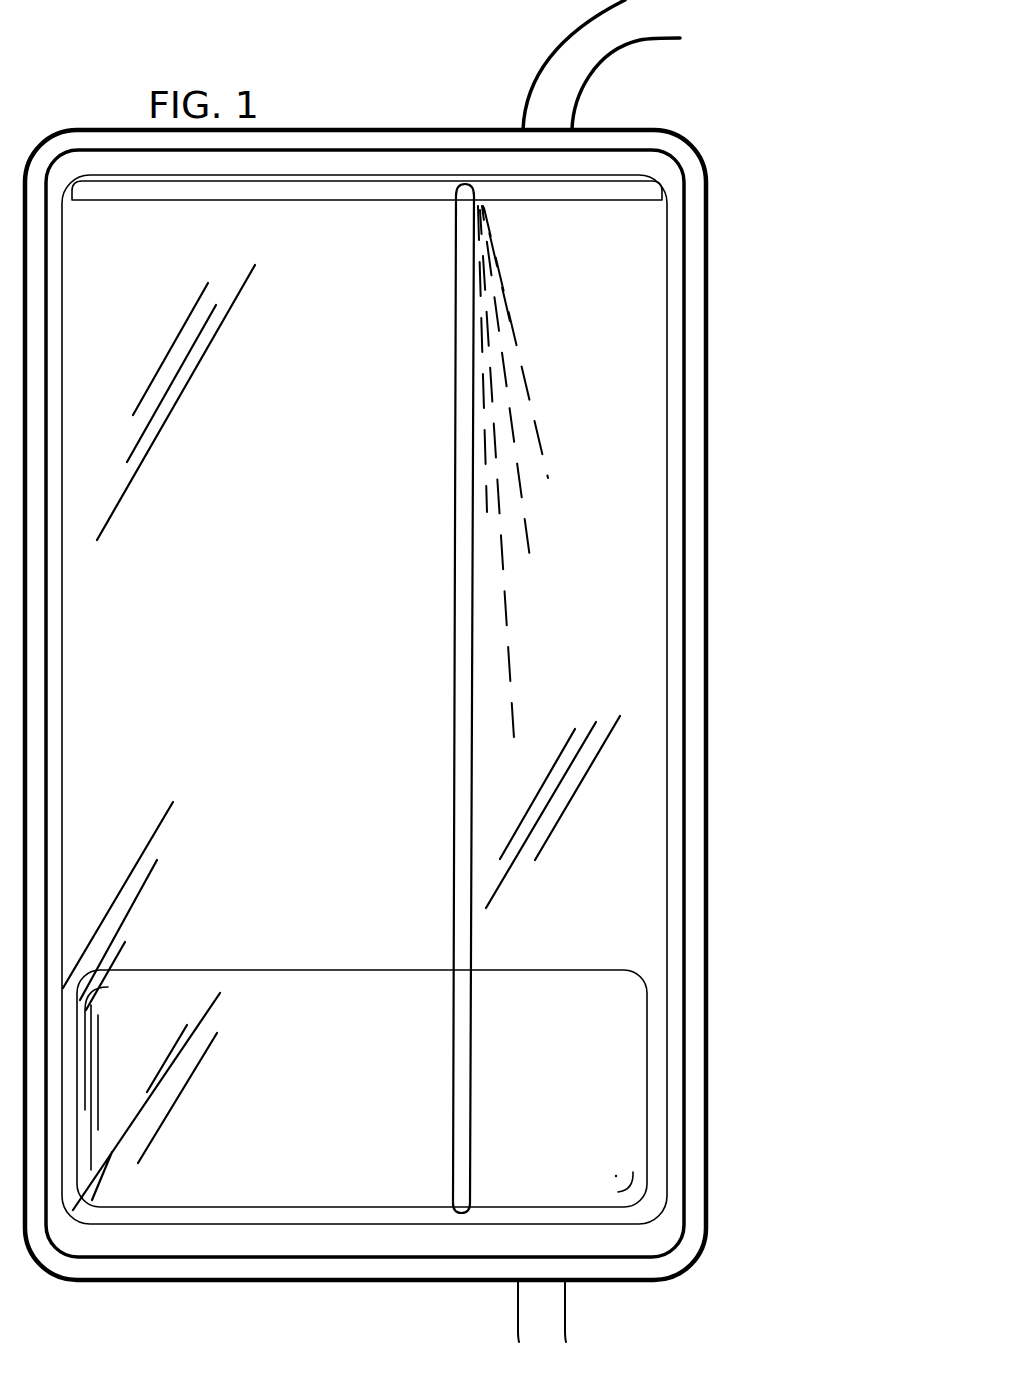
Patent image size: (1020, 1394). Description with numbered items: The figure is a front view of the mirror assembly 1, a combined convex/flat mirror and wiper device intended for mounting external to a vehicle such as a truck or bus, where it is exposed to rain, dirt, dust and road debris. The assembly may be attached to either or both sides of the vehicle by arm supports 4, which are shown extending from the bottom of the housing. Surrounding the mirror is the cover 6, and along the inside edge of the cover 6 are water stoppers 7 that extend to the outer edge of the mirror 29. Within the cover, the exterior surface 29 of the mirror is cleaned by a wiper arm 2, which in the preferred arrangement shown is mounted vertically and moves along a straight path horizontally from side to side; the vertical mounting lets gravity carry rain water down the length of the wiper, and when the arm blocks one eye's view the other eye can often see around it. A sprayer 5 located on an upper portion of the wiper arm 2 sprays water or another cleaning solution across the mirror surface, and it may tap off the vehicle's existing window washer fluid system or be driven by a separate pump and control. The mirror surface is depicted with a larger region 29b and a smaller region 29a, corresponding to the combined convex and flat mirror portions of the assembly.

The mirror assembly 1 is at (374, 128).
The wiper arm 2 is at (452, 862).
The arm supports 4 is at (566, 1302).
The sprayer 5 is at (479, 198).
The cover 6 is at (707, 760).
The water stoppers 7 is at (250, 173).
The exterior surface 29 is at (657, 572).
The lower chamber section 29a is at (390, 1121).
The upper chamber section 29b is at (401, 683).